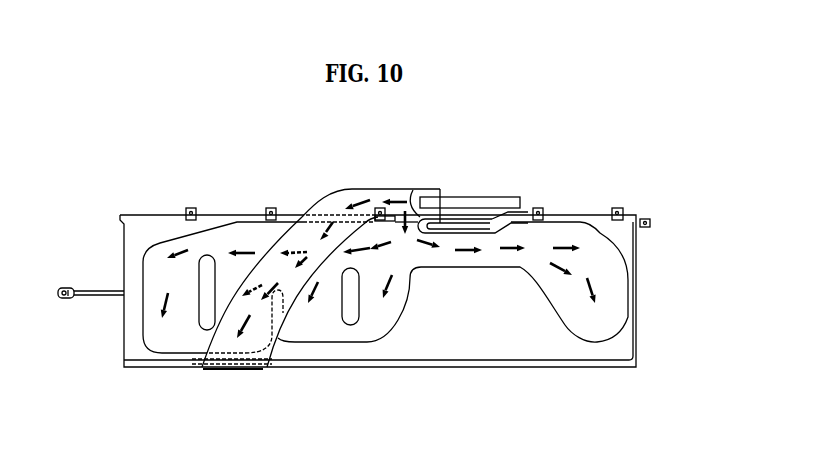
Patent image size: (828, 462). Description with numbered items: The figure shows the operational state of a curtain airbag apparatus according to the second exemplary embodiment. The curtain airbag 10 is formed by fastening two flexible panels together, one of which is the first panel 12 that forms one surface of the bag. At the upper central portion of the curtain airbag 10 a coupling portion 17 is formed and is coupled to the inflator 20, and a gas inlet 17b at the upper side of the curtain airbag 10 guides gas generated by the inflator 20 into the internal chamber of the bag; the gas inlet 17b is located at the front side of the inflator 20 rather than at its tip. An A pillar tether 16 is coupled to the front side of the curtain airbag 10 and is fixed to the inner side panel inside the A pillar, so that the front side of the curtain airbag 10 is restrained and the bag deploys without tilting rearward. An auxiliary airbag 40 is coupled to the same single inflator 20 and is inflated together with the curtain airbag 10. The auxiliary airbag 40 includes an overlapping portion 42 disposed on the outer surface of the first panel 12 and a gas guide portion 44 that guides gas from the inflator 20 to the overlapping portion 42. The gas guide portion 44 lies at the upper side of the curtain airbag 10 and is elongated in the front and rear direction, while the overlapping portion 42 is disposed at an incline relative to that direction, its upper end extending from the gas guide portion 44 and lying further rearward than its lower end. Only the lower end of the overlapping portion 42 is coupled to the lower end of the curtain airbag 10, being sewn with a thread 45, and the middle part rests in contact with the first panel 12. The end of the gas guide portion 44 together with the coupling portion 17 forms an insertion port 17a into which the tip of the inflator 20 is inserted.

The curtain airbag 10 is at (633, 203).
The first panel 12 is at (468, 340).
The A pillar tether 16 is at (90, 292).
The coupling portion 17 is at (435, 221).
The insertion port 17a is at (435, 195).
The gas inlet 17b is at (412, 195).
The inflator 20 is at (458, 198).
The auxiliary airbag 40 is at (307, 204).
The overlapping portion 42 is at (224, 340).
The gas guide portion 44 is at (382, 189).
The thread 45 is at (247, 367).